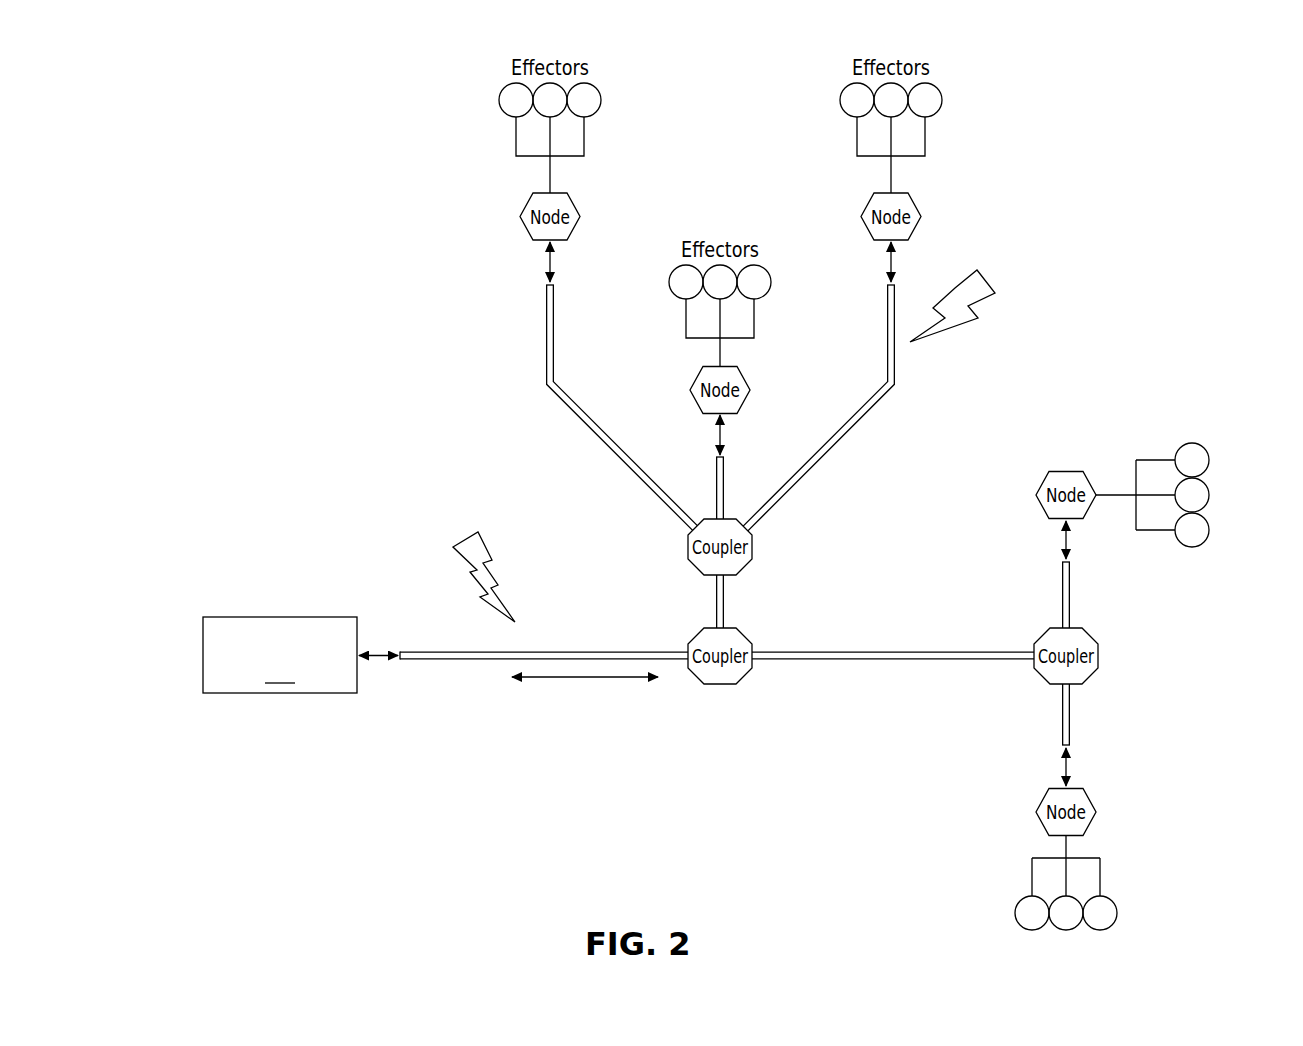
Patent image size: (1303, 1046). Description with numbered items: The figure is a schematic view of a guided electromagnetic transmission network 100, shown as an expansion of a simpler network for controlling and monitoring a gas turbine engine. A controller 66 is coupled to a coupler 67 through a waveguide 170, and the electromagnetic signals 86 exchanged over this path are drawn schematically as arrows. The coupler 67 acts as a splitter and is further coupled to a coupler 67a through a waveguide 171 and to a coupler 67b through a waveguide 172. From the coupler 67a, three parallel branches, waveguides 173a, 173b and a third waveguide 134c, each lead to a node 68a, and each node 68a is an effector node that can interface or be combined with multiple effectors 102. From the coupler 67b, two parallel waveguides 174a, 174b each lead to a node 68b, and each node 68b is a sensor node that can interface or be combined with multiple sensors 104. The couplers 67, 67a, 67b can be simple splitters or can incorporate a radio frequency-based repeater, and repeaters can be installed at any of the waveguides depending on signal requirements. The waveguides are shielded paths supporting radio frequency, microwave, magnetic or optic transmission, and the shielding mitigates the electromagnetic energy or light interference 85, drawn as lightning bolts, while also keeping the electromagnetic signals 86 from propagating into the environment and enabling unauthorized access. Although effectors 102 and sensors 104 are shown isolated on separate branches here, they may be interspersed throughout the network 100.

The guided electromagnetic transmission network 100 is at (352, 72).
The controller 66 is at (280, 655).
The coupler 67 is at (718, 688).
The coupler 67a is at (745, 570).
The coupler 67b is at (1100, 657).
The node 68a is at (578, 208).
The node 68b is at (1068, 470).
The electromagnetic energy or light interference 85 is at (473, 545).
The electromagnetic signals 86 is at (586, 684).
The effectors 102 is at (592, 100).
The sensors 104 is at (1192, 443).
The bus branch 134c is at (815, 468).
The waveguide 170 is at (423, 662).
The waveguide 171 is at (716, 602).
The waveguide 172 is at (866, 662).
The waveguide 173a is at (546, 340).
The waveguide 173b is at (716, 470).
The waveguide 174a is at (1062, 602).
The waveguide 174b is at (1060, 720).